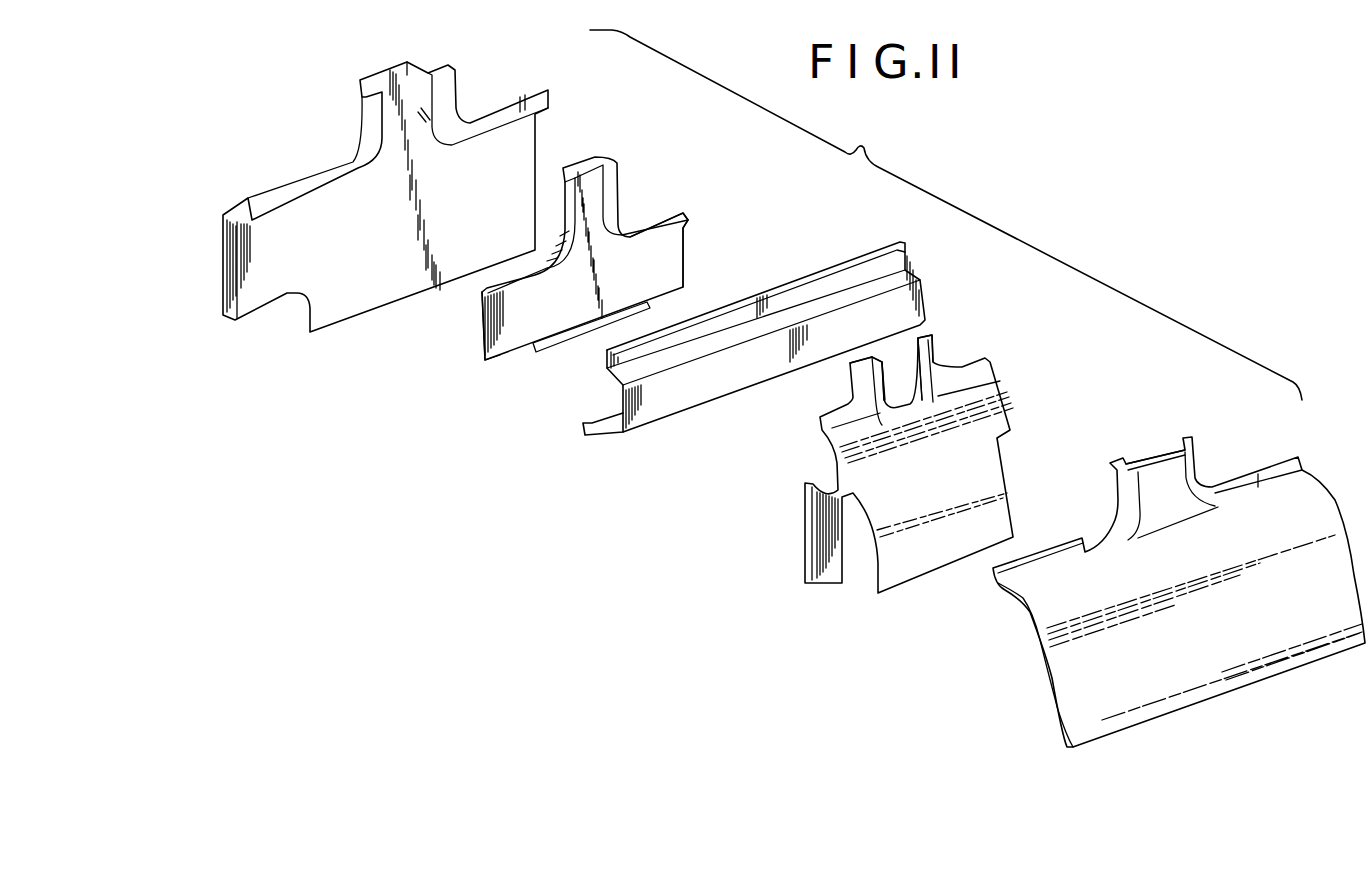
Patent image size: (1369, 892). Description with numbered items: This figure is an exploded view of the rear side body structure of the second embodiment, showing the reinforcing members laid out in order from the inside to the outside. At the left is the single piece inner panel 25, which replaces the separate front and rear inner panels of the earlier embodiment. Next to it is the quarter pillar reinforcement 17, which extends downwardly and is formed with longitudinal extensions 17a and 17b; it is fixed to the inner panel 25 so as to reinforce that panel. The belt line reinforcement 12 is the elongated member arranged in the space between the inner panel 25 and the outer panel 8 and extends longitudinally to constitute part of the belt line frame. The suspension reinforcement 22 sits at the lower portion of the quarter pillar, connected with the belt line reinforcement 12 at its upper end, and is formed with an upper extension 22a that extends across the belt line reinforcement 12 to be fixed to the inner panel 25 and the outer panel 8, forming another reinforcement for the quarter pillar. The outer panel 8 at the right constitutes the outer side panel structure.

The outer panel 8 is at (1070, 678).
The belt line reinforcement 12 is at (660, 405).
The quarter pillar reinforcement 17 is at (505, 362).
The longitudinal extension 17a is at (482, 356).
The longitudinal extension 17b is at (678, 275).
The suspension reinforcement 22 is at (860, 570).
The upper extension 22a is at (902, 383).
The inner panel 25 is at (350, 308).